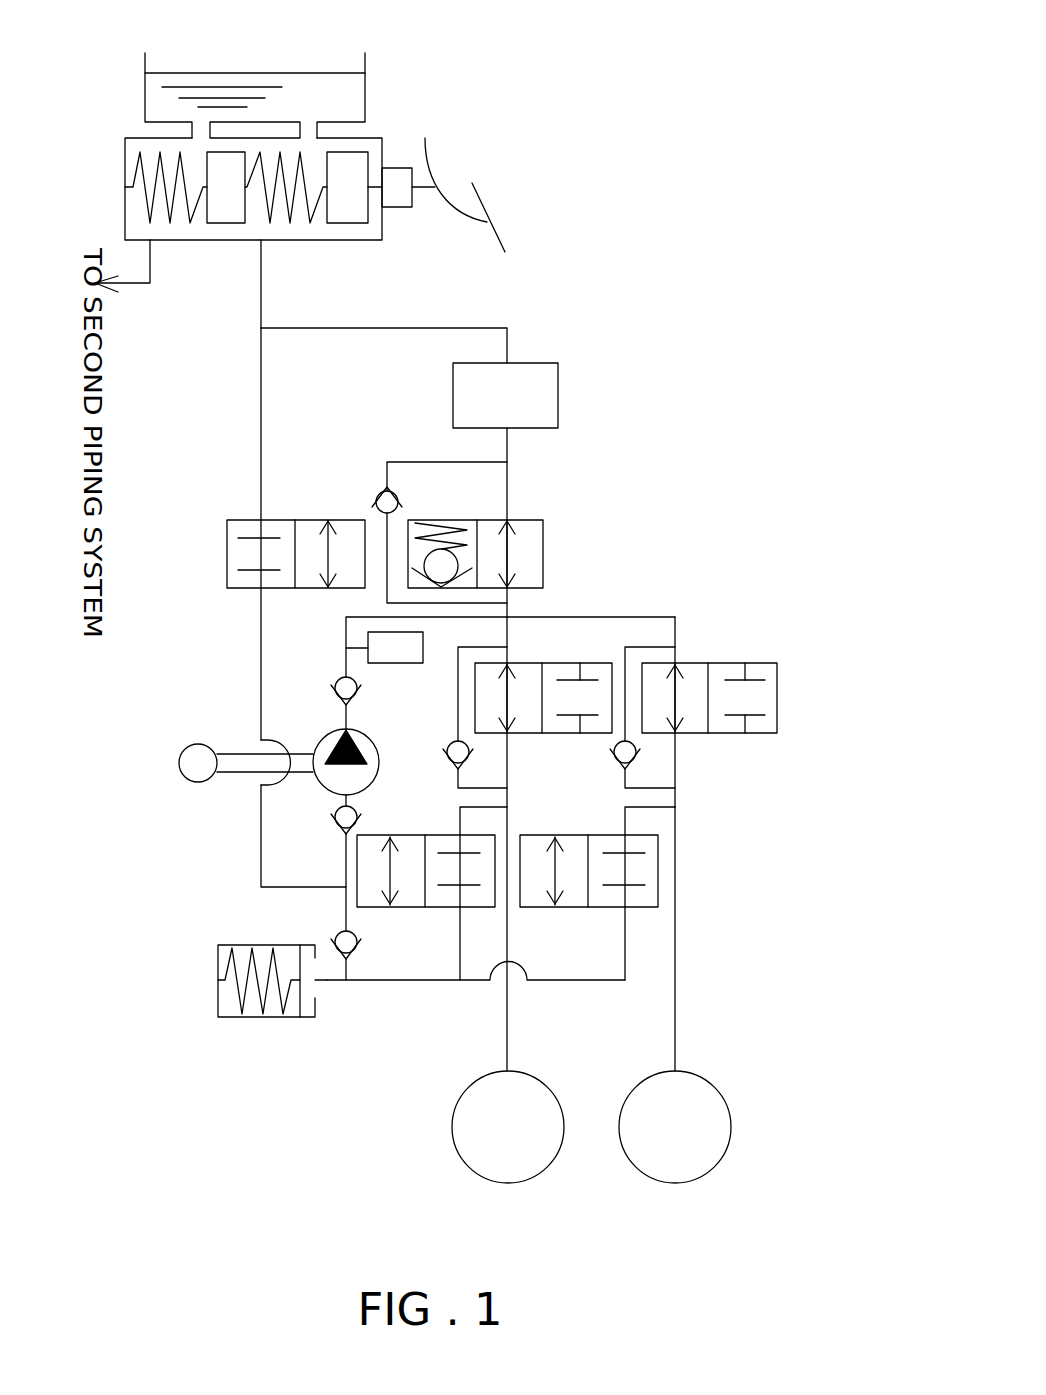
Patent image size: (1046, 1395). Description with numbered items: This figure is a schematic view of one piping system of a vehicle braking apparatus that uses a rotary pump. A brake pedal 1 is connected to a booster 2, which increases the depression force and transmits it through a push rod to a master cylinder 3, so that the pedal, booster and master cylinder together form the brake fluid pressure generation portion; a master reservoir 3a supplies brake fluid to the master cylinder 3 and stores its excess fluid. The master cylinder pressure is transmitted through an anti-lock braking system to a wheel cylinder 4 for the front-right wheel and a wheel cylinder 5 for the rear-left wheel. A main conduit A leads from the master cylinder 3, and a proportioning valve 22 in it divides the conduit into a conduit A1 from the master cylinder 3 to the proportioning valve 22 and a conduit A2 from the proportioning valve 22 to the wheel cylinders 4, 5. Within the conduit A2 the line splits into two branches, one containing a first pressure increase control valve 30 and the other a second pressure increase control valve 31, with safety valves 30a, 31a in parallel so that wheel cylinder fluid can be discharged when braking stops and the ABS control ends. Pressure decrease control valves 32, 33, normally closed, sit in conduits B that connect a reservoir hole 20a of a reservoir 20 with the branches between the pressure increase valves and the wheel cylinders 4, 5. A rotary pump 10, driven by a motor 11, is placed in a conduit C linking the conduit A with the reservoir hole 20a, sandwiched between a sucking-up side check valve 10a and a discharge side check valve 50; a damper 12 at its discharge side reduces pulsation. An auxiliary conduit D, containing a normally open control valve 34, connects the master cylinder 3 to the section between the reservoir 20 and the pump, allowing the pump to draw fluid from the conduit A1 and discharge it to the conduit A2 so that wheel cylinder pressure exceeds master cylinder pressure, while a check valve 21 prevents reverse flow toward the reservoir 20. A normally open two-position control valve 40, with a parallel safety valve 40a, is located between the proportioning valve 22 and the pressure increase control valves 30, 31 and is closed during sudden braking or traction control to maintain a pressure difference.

The brake pedal 1 is at (480, 197).
The booster 2 is at (398, 207).
The master cylinder 3 is at (122, 161).
The master reservoir 3a is at (188, 82).
The wheel cylinder 4 is at (460, 1153).
The wheel cylinder 5 is at (627, 1153).
The rotary pump 10 is at (322, 733).
The check valve 10a is at (338, 830).
The motor 11 is at (180, 750).
The damper 12 is at (398, 667).
The reservoir 20 is at (218, 995).
The reservoir hole 20a is at (318, 978).
The check valve 21 is at (377, 980).
The proportioning valve 22 is at (558, 390).
The first pressure increase control valve 30 is at (585, 663).
The safety valve 30a is at (447, 760).
The second pressure increase control valve 31 is at (733, 735).
The safety valve 31a is at (613, 757).
The pressure decrease control valve 32 is at (437, 833).
The pressure decrease control valve 33 is at (658, 862).
The control valve 34 is at (227, 557).
The control valve 40 is at (545, 542).
The safety valve 40a is at (383, 490).
The check valve 50 is at (333, 702).
The conduit A is at (256, 304).
The conduit A1 is at (480, 327).
The conduit A2 is at (675, 627).
The conduit B is at (625, 945).
The conduit C is at (346, 627).
The conduit D is at (261, 452).